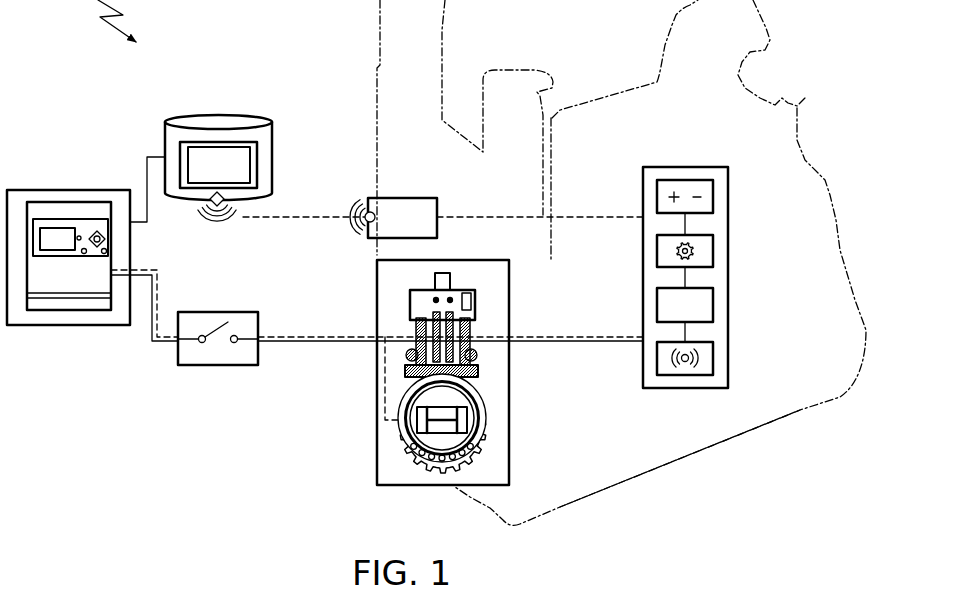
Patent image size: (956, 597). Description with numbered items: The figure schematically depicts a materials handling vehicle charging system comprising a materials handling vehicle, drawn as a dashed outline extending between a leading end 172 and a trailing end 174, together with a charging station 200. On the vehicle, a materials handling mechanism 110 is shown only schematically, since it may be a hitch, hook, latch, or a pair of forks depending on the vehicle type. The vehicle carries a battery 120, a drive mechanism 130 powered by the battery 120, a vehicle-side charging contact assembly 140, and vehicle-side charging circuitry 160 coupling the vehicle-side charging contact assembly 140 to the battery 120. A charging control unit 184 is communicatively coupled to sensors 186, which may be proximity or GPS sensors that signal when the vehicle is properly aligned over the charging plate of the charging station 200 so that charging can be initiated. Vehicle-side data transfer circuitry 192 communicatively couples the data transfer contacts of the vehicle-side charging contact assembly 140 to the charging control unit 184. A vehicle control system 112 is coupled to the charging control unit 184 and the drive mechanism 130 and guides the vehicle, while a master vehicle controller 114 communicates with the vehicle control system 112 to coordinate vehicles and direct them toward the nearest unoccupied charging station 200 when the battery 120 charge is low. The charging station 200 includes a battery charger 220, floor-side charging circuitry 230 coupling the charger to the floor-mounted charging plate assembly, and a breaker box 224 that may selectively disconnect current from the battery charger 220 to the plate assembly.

The materials handling mechanism 110 is at (443, 272).
The vehicle control system 112 is at (400, 198).
The master vehicle controller 114 is at (218, 115).
The battery 120 is at (713, 197).
The drive mechanism 130 is at (713, 252).
The vehicle-side charging contact assembly 140 is at (389, 301).
The vehicle-side charging circuitry 160 is at (580, 345).
The leading end 172 is at (806, 100).
The trailing end 174 is at (555, 500).
The charging control unit 184 is at (713, 307).
The sensors 186 is at (713, 360).
The vehicle-side data transfer circuitry 192 is at (563, 335).
The charging station 200 is at (496, 431).
The battery charger 220 is at (68, 325).
The breaker box 224 is at (218, 367).
The floor-side charging circuitry 230 is at (328, 345).